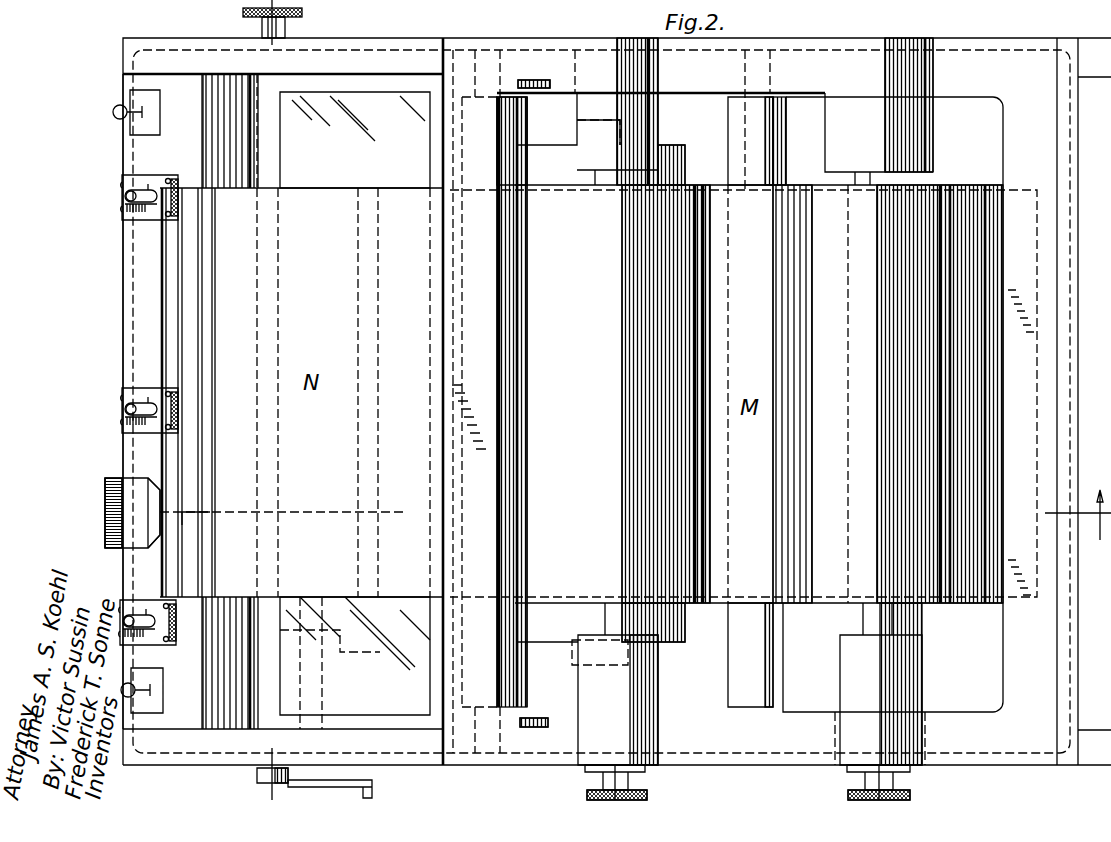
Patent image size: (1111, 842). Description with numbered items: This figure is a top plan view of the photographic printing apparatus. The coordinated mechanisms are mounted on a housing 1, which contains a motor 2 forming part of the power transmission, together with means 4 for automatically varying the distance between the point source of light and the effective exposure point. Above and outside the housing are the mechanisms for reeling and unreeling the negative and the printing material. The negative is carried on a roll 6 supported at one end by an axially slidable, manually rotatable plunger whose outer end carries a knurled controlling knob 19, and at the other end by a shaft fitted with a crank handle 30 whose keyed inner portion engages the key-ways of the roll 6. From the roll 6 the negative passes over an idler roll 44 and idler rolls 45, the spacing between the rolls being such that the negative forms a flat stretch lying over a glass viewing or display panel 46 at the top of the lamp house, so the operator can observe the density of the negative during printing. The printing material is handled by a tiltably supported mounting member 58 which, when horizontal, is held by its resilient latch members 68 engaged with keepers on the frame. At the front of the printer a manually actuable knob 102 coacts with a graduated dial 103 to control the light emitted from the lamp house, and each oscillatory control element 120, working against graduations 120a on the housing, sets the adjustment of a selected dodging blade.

The housing 1 is at (118, 620).
The motor 2 is at (108, 502).
The means for automatically varying the distance 4 is at (115, 410).
The roll 6 is at (107, 527).
The knurled controlling knob 19 is at (243, 10).
The crank handle 30 is at (372, 784).
The idler roll 44 is at (203, 150).
The idler roll 45 is at (510, 127).
The glass viewing or display panel 46 is at (355, 403).
The mounting member 58 is at (490, 280).
The resilient latch members 68 is at (545, 80).
The manually actuable knob 102 is at (108, 480).
The graduated dial 103 is at (140, 500).
The oscillatory control element 120 is at (122, 186).
The graduations 120a is at (124, 205).